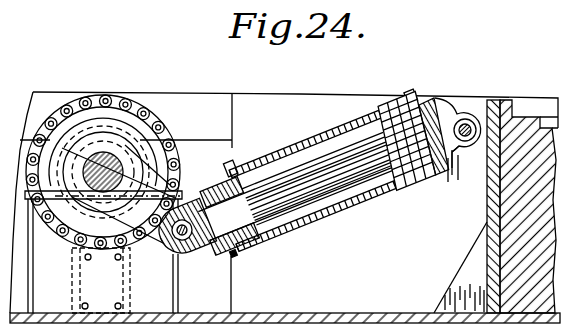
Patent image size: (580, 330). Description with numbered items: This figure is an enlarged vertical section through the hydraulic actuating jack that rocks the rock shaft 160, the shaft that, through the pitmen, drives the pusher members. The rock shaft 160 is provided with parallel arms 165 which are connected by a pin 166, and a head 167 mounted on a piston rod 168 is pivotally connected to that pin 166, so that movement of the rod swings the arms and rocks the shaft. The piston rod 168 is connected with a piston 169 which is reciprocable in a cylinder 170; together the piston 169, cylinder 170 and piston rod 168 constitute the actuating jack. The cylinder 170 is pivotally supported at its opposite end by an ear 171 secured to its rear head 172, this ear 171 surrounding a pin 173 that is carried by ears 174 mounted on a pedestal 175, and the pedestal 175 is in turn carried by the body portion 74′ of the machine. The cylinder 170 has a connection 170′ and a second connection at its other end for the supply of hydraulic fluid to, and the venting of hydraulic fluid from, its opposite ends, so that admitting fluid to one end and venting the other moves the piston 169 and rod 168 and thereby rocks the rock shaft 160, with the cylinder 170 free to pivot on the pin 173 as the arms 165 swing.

The rock shaft 160 is at (108, 168).
The parallel arms 165 is at (152, 218).
The pin 166 is at (178, 237).
The head 167 is at (193, 242).
The piston rod 168 is at (328, 185).
The piston 169 is at (398, 184).
The cylinder 170 is at (303, 137).
The connection 170′ is at (234, 160).
The ear 171 is at (448, 117).
The rear head 172 is at (446, 171).
The pin 173 is at (467, 119).
The ears 174 is at (455, 150).
The pedestal 175 is at (498, 241).
The body portion 74′ is at (356, 313).